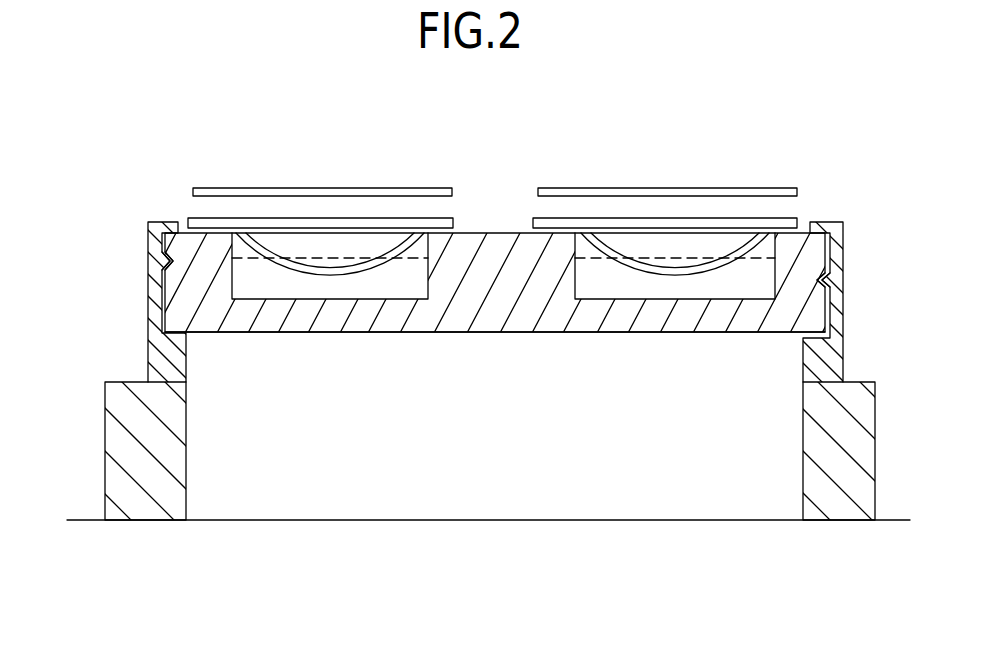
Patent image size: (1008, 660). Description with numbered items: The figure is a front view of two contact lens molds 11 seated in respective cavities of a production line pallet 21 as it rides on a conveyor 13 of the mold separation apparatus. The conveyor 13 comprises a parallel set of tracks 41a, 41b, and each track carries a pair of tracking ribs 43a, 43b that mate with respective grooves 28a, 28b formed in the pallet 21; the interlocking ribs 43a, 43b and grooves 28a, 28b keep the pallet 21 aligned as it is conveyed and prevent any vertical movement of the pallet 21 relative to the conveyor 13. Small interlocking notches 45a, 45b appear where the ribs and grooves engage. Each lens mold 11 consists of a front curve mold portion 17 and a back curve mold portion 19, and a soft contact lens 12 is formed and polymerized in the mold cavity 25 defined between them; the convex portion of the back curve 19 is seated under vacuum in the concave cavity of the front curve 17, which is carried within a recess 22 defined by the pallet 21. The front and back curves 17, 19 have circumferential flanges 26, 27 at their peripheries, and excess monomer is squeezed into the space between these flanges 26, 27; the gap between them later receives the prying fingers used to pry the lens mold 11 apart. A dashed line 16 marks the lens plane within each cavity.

The conveyor 13 is at (100, 186).
The contact lens mold 11 is at (500, 174).
The soft contact lens 12 is at (366, 299).
The focal plane 16 is at (276, 260).
The front curve mold portion 17 is at (352, 238).
The back curve mold portion 19 is at (392, 210).
The production line pallet 21 is at (518, 333).
The recess 22 is at (430, 299).
The mold cavity 25 is at (321, 299).
The circumferential flange 26 is at (213, 188).
The circumferential flange 27 is at (200, 220).
The groove 28a is at (178, 263).
The groove 28b is at (818, 278).
The track 41a is at (160, 378).
The track 41b is at (850, 395).
The tracking rib 43a is at (178, 304).
The tracking rib 43b is at (815, 256).
The left engaging notch 45a is at (165, 256).
The right engaging notch 45b is at (827, 279).